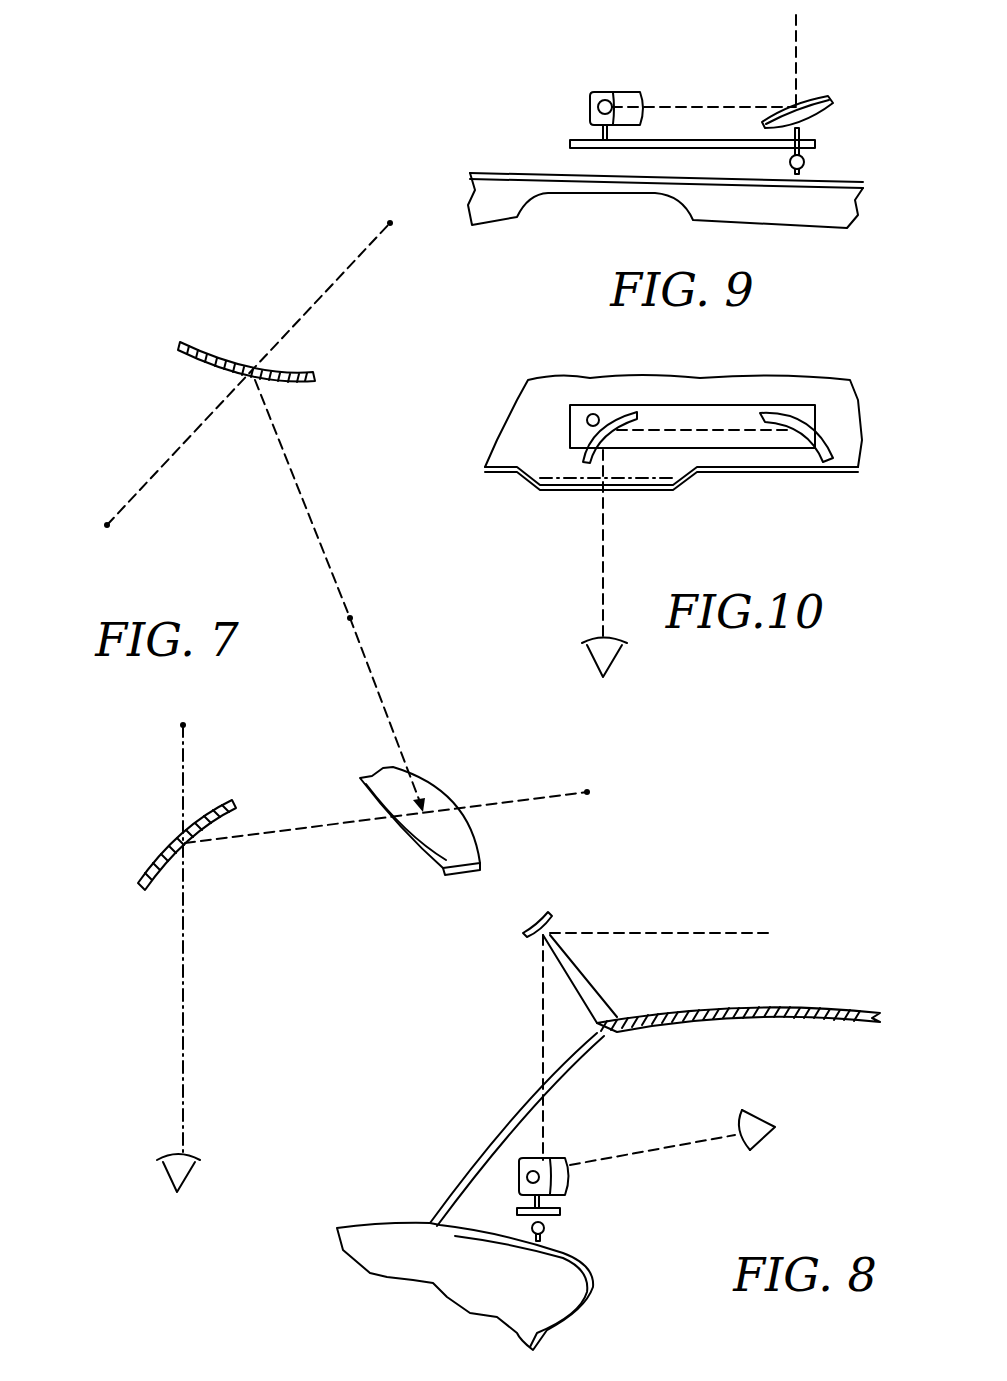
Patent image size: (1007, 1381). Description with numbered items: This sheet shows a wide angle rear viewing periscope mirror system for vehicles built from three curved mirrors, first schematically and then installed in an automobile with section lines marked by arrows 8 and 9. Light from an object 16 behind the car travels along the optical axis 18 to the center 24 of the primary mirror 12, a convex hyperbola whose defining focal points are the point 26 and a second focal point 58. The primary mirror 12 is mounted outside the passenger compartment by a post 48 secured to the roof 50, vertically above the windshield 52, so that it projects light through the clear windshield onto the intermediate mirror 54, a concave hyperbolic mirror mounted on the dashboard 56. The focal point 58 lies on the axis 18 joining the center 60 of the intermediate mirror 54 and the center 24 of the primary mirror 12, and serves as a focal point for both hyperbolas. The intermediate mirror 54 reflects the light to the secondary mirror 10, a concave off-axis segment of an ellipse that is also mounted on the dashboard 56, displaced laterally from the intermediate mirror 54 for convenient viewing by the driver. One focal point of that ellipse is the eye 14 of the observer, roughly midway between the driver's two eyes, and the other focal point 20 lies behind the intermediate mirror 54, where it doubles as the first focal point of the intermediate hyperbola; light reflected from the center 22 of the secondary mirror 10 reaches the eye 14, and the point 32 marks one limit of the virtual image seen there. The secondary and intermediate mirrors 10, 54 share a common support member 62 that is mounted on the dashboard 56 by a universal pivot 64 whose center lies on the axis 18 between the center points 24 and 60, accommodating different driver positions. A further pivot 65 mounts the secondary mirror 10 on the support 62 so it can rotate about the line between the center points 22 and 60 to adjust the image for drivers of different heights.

In FIG. 7, the secondary mirror 10 is at (203, 813).
In FIG. 9, the secondary mirror 10 is at (589, 112).
In FIG. 10, the secondary mirror 10 is at (590, 462).
In FIG. 8, the secondary mirror 10 is at (570, 1193).
In FIG. 7, the primary mirror 12 is at (216, 348).
In FIG. 8, the primary mirror 12 is at (523, 935).
In FIG. 7, the eye 14 is at (185, 1180).
In FIG. 10, the eye 14 is at (604, 658).
In FIG. 8, the eye 14 is at (774, 1129).
In FIG. 7, the object 16 is at (108, 527).
In FIG. 7, the optical axis 18 is at (335, 568).
In FIG. 9, the optical axis 18 is at (800, 62).
In FIG. 7, the focal point 20 is at (587, 790).
In FIG. 7, the center of secondary mirror 22 is at (187, 843).
In FIG. 7, the center of primary mirror 24 is at (255, 380).
In FIG. 7, the focal point 26 is at (391, 221).
In FIG. 7, the point 32 is at (181, 725).
In FIG. 8, the post 48 is at (587, 972).
In FIG. 8, the roof 50 is at (747, 1007).
In FIG. 8, the windshield 52 is at (447, 1192).
In FIG. 7, the intermediate mirror 54 is at (478, 836).
In FIG. 9, the intermediate mirror 54 is at (822, 118).
In FIG. 10, the intermediate mirror 54 is at (812, 462).
In FIG. 9, the dashboard 56 is at (800, 220).
In FIG. 10, the dashboard 56 is at (528, 409).
In FIG. 8, the dashboard 56 is at (577, 1303).
In FIG. 7, the focal point 58 is at (347, 618).
In FIG. 7, the center of intermediate mirror 60 is at (428, 804).
In FIG. 9, the common support member 62 is at (570, 144).
In FIG. 10, the common support member 62 is at (741, 452).
In FIG. 8, the common support member 62 is at (560, 1212).
In FIG. 9, the universal pivot 64 is at (804, 163).
In FIG. 8, the universal pivot 64 is at (547, 1228).
In FIG. 9, the pivot 65 is at (608, 86).
In FIG. 10, the pivot 65 is at (595, 412).
In FIG. 8, the pivot 65 is at (518, 1176).
In FIG. 8, the section line 8 is at (609, 1112).
In FIG. 8, the section line 9 is at (475, 1121).